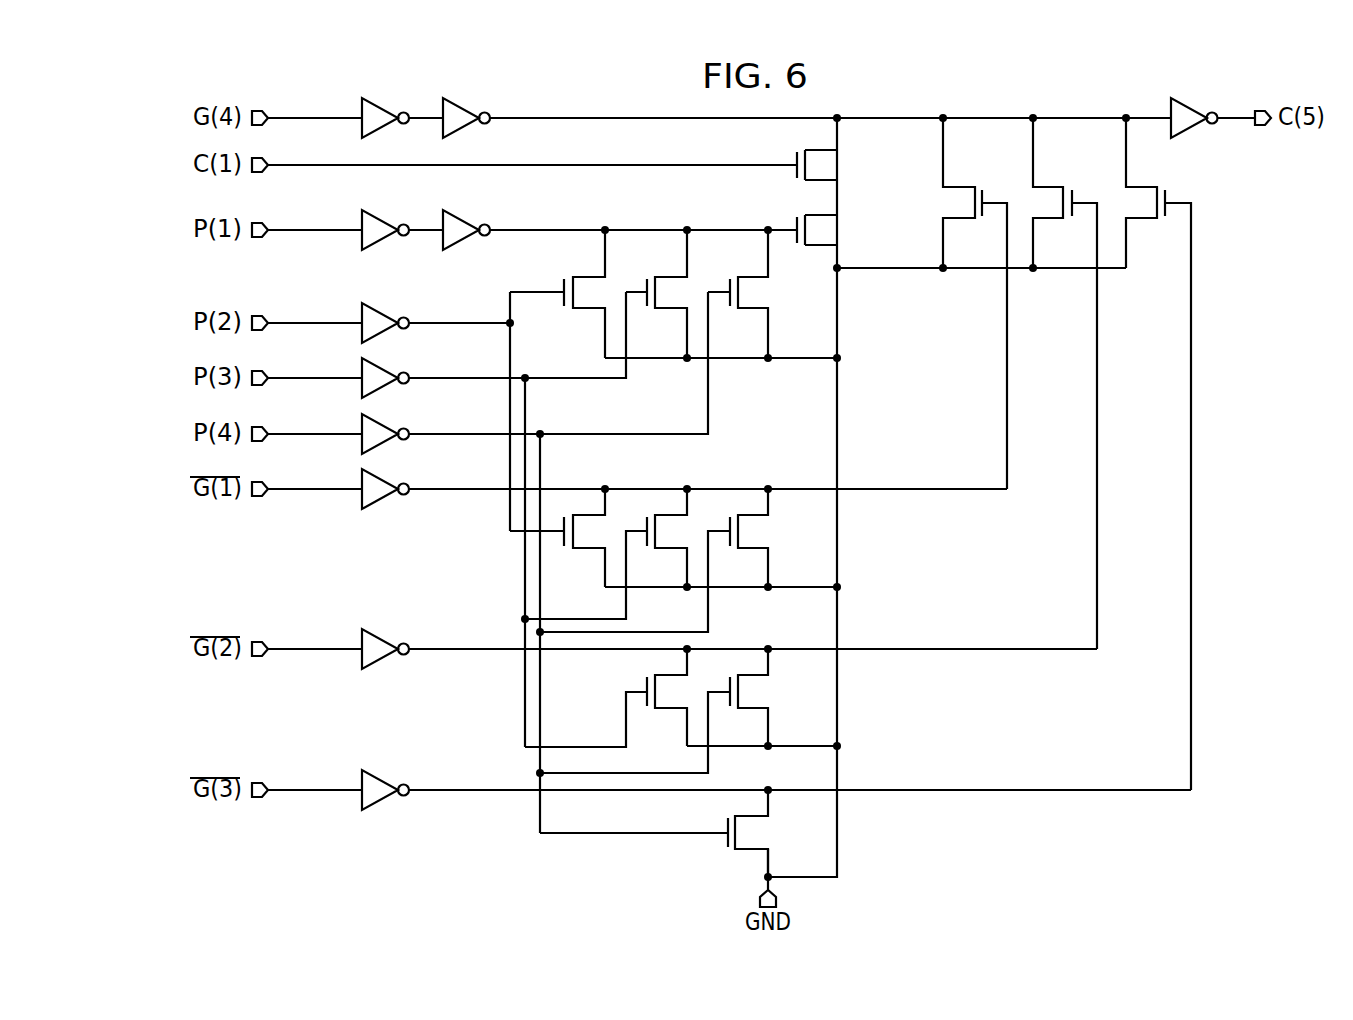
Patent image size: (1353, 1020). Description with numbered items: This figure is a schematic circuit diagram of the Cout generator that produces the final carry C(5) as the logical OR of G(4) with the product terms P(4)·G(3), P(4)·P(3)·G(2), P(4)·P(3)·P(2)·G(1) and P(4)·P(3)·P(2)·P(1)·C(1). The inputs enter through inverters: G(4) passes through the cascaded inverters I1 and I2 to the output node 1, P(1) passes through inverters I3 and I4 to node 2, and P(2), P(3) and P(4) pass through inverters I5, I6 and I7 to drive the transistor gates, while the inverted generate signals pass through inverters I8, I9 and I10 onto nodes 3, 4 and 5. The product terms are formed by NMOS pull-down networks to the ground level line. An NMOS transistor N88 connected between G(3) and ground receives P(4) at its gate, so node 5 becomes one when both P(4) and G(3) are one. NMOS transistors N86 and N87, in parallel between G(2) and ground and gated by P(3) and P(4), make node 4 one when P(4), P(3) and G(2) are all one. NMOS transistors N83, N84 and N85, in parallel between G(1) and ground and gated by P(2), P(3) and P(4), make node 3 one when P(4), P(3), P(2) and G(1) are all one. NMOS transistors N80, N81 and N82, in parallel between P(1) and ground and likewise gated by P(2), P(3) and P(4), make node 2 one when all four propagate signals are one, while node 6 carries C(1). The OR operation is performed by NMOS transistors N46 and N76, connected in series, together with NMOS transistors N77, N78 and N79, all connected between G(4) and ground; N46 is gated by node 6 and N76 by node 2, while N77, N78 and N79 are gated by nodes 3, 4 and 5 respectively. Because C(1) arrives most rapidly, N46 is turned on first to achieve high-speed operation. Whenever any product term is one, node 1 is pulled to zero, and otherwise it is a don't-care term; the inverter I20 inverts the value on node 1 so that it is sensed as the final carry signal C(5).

The node 1 is at (972, 114).
The node 2 is at (730, 228).
The node 3 is at (942, 489).
The node 4 is at (942, 648).
The node 5 is at (942, 790).
The node 6 is at (730, 163).
The inverter I1 is at (373, 105).
The inverter I2 is at (454, 105).
The inverter I3 is at (373, 219).
The inverter I4 is at (454, 219).
The inverter I5 is at (380, 312).
The inverter I6 is at (380, 367).
The inverter I7 is at (380, 422).
The inverter I8 is at (380, 477).
The inverter I9 is at (380, 636).
The inverter I10 is at (378, 776).
The inverter I20 is at (1185, 102).
The NMOS transistor N46 is at (841, 166).
The NMOS transistor N76 is at (841, 231).
The NMOS transistor N77 is at (975, 303).
The NMOS transistor N78 is at (1065, 383).
The NMOS transistor N79 is at (1158, 454).
The NMOS transistor N80 is at (557, 294).
The NMOS transistor N81 is at (656, 294).
The NMOS transistor N82 is at (738, 294).
The NMOS transistor N83 is at (557, 538).
The NMOS transistor N84 is at (606, 554).
The NMOS transistor N85 is at (654, 560).
The NMOS transistor N86 is at (606, 698).
The NMOS transistor N87 is at (654, 711).
The NMOS transistor N88 is at (665, 833).